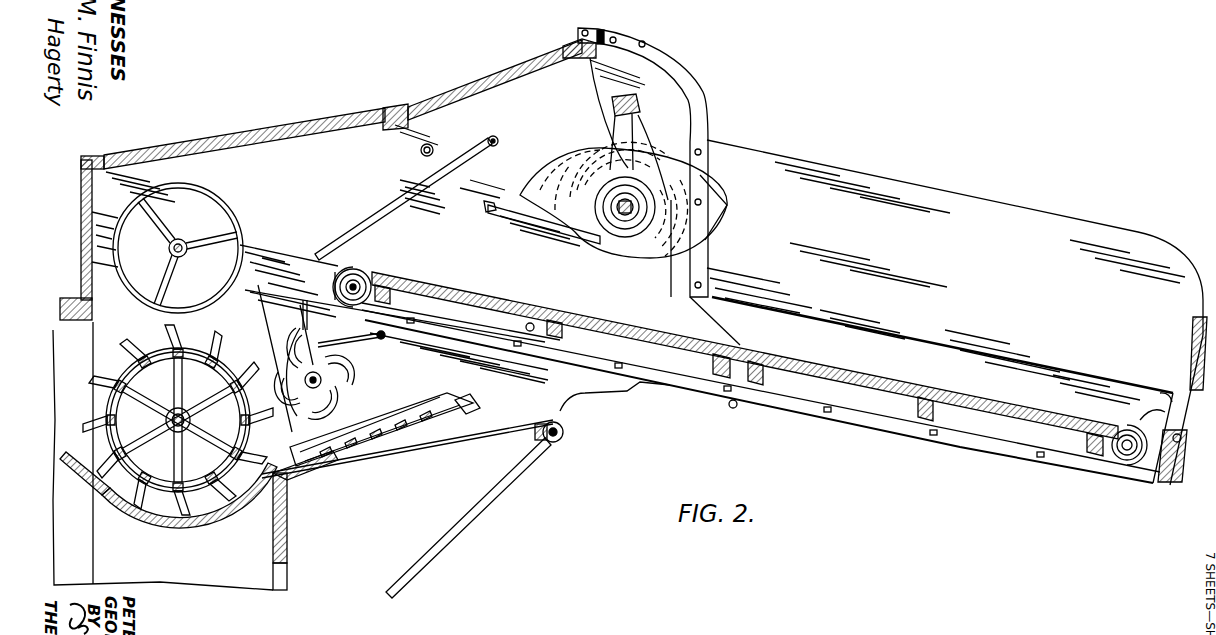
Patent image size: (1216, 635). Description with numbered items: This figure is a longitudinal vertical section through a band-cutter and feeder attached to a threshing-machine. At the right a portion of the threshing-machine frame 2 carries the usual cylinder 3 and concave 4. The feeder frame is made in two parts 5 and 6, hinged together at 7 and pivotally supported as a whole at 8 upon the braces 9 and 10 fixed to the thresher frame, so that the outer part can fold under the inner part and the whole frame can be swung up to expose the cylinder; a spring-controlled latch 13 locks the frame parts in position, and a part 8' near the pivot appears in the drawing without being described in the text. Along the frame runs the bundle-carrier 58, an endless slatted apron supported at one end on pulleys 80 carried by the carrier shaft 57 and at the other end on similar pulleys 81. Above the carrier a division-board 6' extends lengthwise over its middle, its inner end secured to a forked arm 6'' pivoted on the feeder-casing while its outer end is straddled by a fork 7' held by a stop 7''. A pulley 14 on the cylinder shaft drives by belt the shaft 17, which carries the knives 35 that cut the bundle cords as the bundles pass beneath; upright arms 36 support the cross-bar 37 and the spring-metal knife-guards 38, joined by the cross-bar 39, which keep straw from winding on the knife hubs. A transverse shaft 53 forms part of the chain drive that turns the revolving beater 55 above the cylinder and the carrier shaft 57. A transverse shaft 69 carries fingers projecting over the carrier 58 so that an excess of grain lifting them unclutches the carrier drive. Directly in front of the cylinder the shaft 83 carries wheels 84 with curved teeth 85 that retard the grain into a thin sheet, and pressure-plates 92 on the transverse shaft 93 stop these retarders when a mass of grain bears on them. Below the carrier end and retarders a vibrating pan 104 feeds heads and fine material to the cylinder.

The frame of the threshing-machine 2 is at (288, 553).
The cylinder 3 is at (81, 190).
The concave 4 is at (214, 518).
The frame part 5 is at (713, 425).
The frame part 6 is at (709, 254).
The division-board 6' is at (955, 272).
The forked arm 6'' is at (659, 186).
The hinge 7 is at (739, 413).
The fork 7' is at (1153, 404).
The stop 7'' is at (1182, 401).
The pivot 8 is at (602, 413).
The pivot bracket 8' is at (1154, 417).
The brace 9 is at (508, 478).
The brace 10 is at (520, 428).
The spring-controlled latch 13 is at (394, 200).
The pulley 14 is at (332, 251).
The shaft 17 is at (618, 216).
The knives 35 is at (727, 214).
The upright arms 36 is at (612, 133).
The cross-bar 37 is at (638, 104).
The knife-guards 38 is at (636, 132).
The cross-bar 39 is at (486, 206).
The transverse shaft 53 is at (432, 146).
The revolving beater 55 is at (172, 280).
The shaft of the bundle-carrier 57 is at (327, 290).
The bundle-carrier 58 is at (418, 280).
The transverse shaft 69 is at (499, 141).
The pulleys 80 is at (367, 276).
The pulleys 81 is at (1112, 462).
The shaft 83 is at (328, 372).
The wheels 84 is at (320, 405).
The curved teeth 85 is at (358, 366).
The pressure-plates 92 is at (280, 373).
The transverse shaft 93 is at (388, 337).
The vibrating pan 104 is at (410, 402).